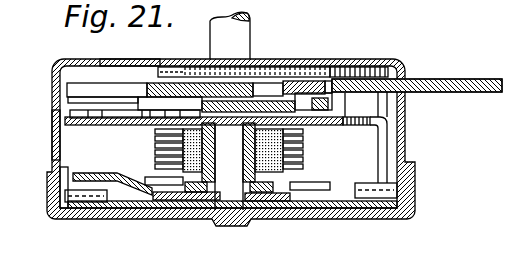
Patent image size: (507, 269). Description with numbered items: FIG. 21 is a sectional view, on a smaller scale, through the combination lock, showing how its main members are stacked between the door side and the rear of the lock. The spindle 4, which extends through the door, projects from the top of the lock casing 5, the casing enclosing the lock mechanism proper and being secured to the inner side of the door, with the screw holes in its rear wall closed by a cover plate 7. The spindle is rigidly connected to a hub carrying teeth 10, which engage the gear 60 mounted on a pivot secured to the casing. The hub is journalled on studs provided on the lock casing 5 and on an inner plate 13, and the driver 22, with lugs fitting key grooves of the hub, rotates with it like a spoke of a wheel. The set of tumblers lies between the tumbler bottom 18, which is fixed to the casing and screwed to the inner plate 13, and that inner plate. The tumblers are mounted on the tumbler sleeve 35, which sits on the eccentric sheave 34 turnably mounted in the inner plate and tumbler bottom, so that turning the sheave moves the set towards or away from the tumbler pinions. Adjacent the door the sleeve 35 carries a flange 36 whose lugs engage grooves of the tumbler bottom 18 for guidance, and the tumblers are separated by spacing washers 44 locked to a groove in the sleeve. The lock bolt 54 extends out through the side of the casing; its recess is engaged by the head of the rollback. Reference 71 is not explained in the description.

The spindle 4 is at (215, 40).
The lock casing 5 is at (127, 59).
The cover plate 7 is at (378, 212).
The teeth 10 is at (267, 72).
The inner plate 13 is at (169, 207).
The tumbler bottom 18 is at (63, 132).
The driver 22 is at (468, 4).
The eccentric sheave 34 is at (231, 186).
The tumbler sleeve 35 is at (266, 190).
The flange 36 is at (292, 180).
The spacing washers 44 is at (300, 138).
The lock bolt 54 is at (452, 80).
The gear 60 is at (343, 66).
The element 71 is at (497, 163).